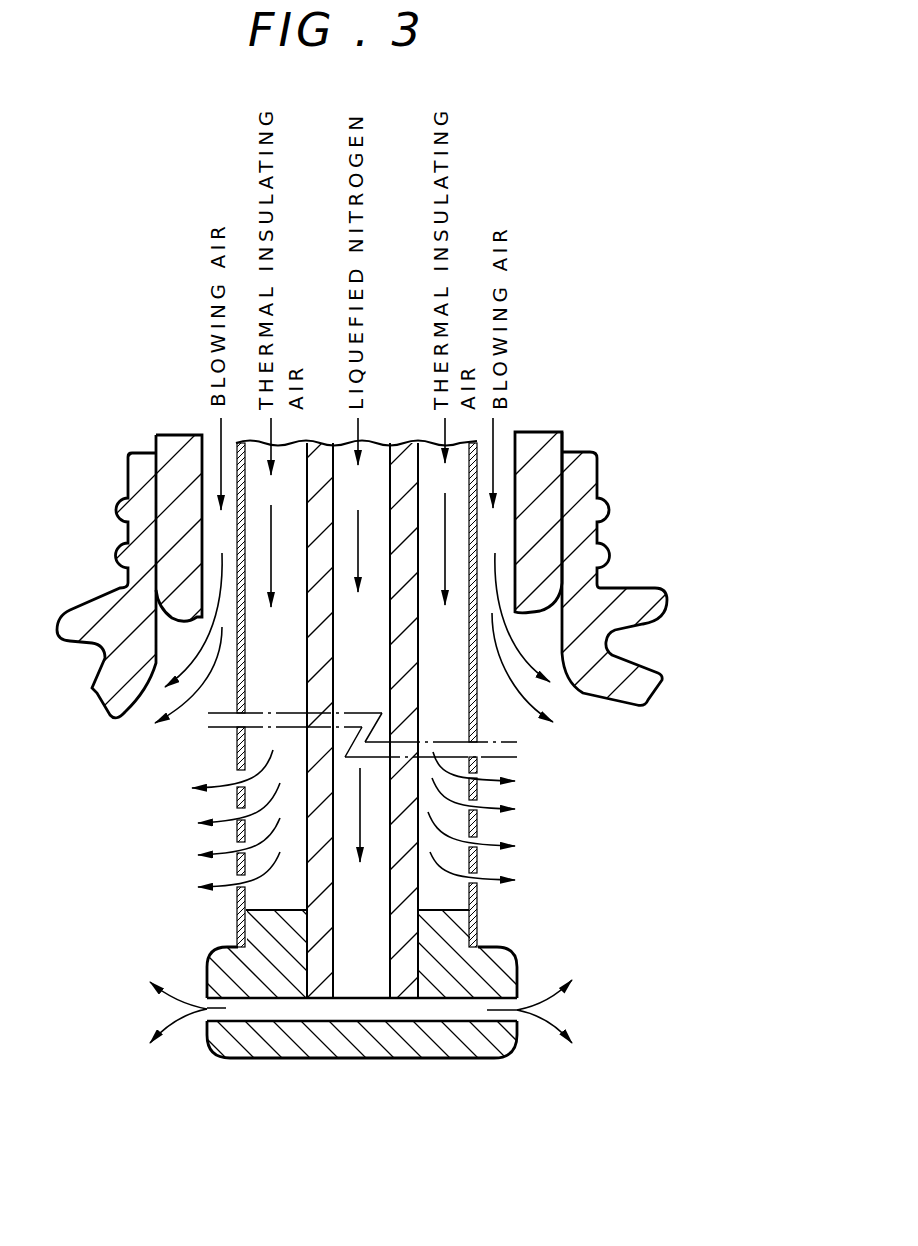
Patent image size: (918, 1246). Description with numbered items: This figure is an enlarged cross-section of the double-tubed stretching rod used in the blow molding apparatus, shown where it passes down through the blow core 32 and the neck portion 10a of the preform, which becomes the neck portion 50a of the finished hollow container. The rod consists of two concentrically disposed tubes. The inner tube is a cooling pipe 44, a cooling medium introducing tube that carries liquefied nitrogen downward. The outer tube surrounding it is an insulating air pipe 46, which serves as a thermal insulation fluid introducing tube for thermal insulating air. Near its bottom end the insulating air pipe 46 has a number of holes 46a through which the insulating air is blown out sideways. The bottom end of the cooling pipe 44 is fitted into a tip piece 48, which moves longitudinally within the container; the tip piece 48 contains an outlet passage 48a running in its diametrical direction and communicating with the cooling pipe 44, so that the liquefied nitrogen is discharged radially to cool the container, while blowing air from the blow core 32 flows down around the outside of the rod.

The blow core 32 is at (178, 637).
The neck portion 10a is at (580, 492).
The neck portion of the hollow container 50a is at (459, 623).
The cooling pipe 44 is at (320, 688).
The insulating air pipe 46 is at (419, 695).
The holes 46a is at (477, 873).
The tip piece 48 is at (417, 623).
The outlet passage 48a is at (342, 1007).